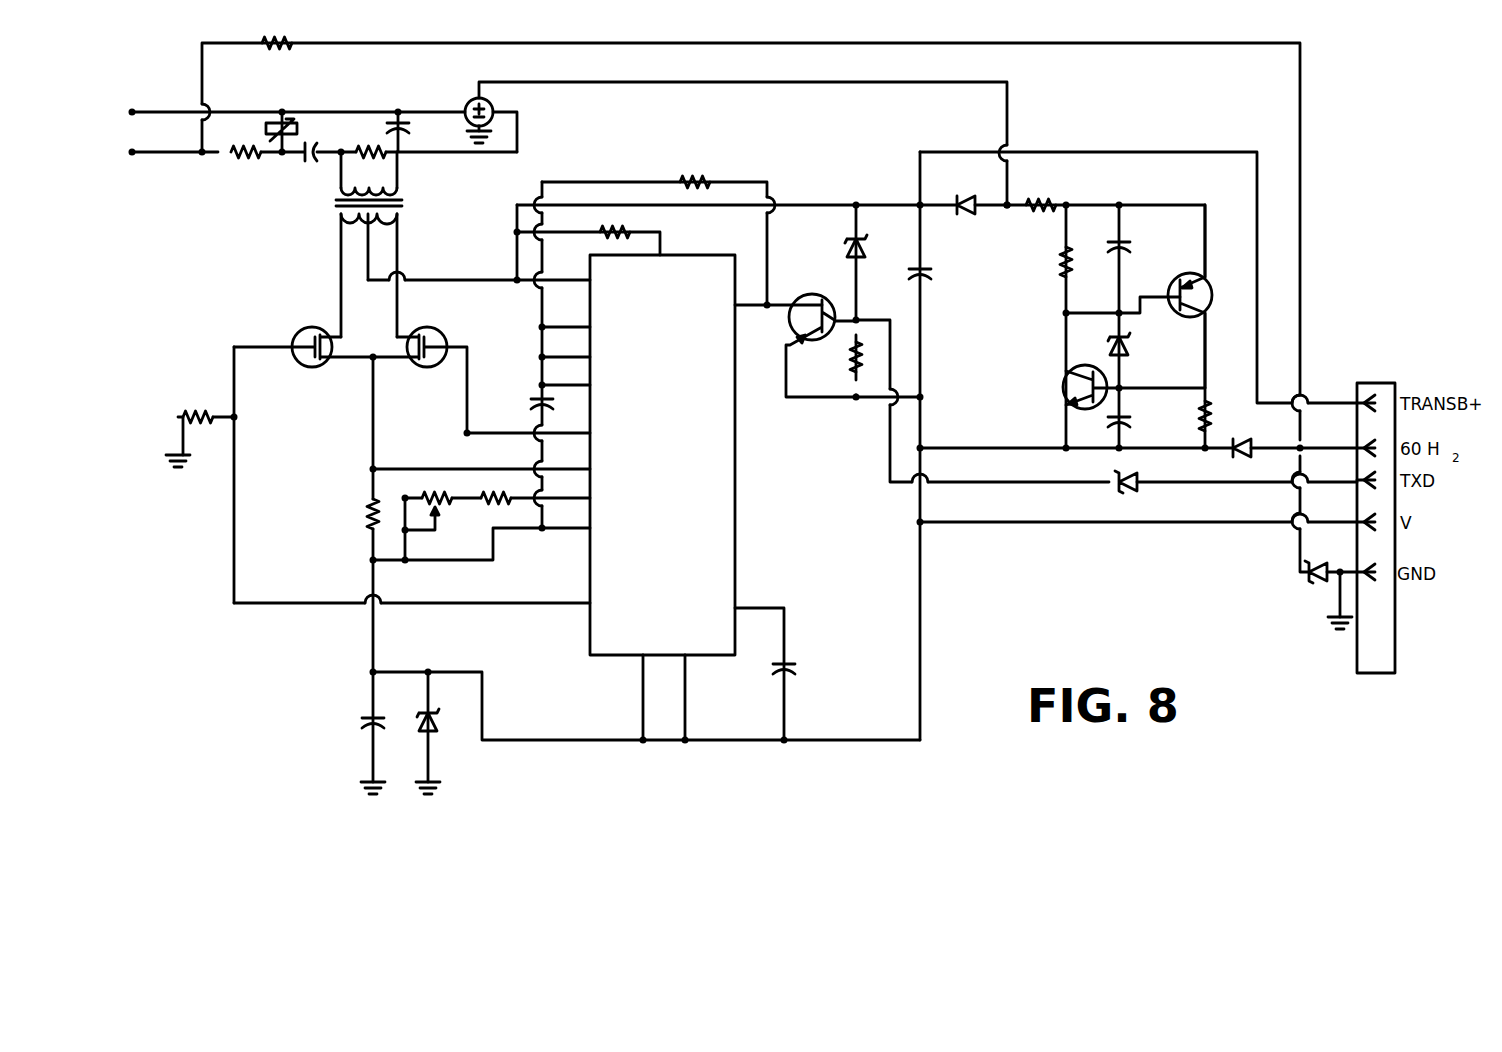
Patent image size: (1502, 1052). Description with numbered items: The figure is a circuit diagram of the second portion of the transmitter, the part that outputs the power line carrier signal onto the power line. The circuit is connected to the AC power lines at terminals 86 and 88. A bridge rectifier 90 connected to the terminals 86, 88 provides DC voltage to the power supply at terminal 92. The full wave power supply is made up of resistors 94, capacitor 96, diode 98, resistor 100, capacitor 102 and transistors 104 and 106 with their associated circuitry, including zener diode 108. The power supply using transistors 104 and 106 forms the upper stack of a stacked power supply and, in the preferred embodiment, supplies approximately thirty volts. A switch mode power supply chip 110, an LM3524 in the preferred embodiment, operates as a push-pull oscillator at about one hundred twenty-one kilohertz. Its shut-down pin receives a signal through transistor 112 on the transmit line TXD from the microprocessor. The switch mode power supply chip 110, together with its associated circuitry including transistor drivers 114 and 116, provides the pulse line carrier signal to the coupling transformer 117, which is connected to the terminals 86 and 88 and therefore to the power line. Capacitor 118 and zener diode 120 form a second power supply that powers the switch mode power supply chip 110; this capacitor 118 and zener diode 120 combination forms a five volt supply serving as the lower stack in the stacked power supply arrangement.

The terminal 86 is at (134, 110).
The terminal 88 is at (135, 155).
The bridge rectifier 90 is at (473, 99).
The terminal 92 is at (1008, 210).
The resistors 94 is at (244, 158).
The capacitor 96 is at (312, 158).
The diode 98 is at (974, 199).
The resistor 100 is at (1034, 199).
The capacitor 102 is at (934, 272).
The transistor 104 is at (1063, 398).
The transistor 106 is at (1183, 274).
The zener diode 108 is at (1130, 345).
The switch mode power supply chip 110 is at (590, 640).
The transistor 112 is at (821, 288).
The transistor driver 114 is at (302, 327).
The transistor driver 116 is at (408, 183).
The coupling transformer 117 is at (432, 327).
The capacitor 118 is at (362, 727).
The zener diode 120 is at (450, 722).